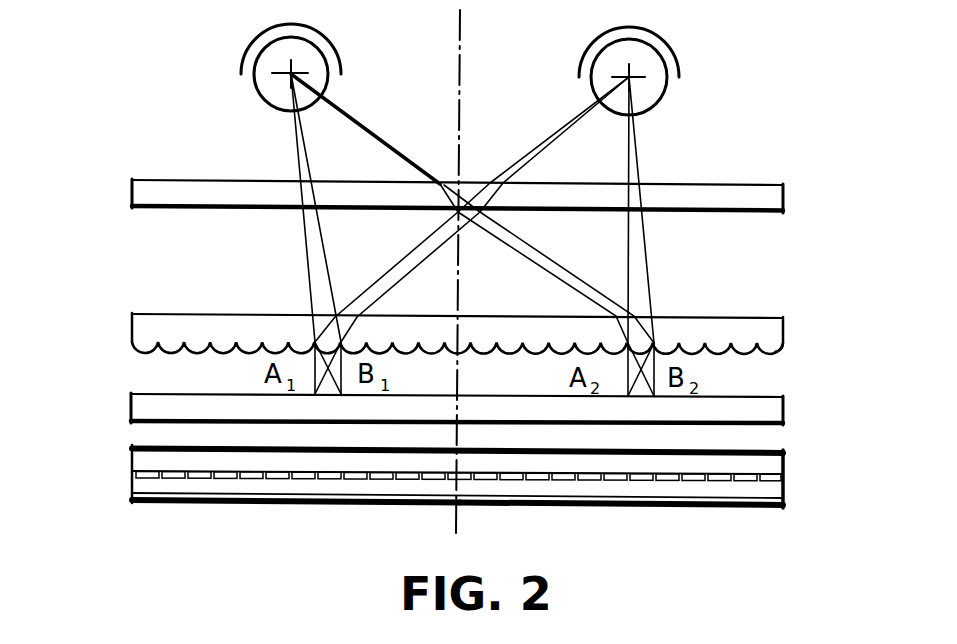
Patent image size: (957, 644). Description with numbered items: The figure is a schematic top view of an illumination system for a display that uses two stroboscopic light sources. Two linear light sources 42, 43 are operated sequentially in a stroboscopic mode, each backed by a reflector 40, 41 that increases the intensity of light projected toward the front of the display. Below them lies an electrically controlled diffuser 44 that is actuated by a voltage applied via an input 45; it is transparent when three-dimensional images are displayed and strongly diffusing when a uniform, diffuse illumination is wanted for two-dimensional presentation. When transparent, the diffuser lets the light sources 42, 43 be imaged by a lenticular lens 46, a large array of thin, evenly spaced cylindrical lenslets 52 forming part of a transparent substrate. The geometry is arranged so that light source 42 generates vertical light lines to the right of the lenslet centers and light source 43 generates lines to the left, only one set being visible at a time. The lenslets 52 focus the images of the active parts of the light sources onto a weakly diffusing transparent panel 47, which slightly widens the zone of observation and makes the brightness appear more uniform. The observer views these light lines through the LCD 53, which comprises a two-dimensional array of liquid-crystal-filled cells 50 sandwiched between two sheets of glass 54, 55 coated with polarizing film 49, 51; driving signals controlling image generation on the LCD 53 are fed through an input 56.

The reflector 40 is at (250, 50).
The reflector 41 is at (673, 50).
The light source 42 is at (257, 92).
The light source 43 is at (667, 97).
The electrically controlled diffuser 44 is at (132, 193).
The input 45 is at (793, 197).
The lenticular lens 46 is at (786, 332).
The weakly diffusing transparent panel 47 is at (783, 407).
The polarizing film 49 is at (770, 450).
The cells 50 is at (130, 478).
The polarizing film 51 is at (737, 508).
The lenslets 52 is at (745, 355).
The LCD 53 is at (187, 505).
The sheet of glass 54 is at (130, 460).
The sheet of glass 55 is at (130, 495).
The input 56 is at (449, 491).